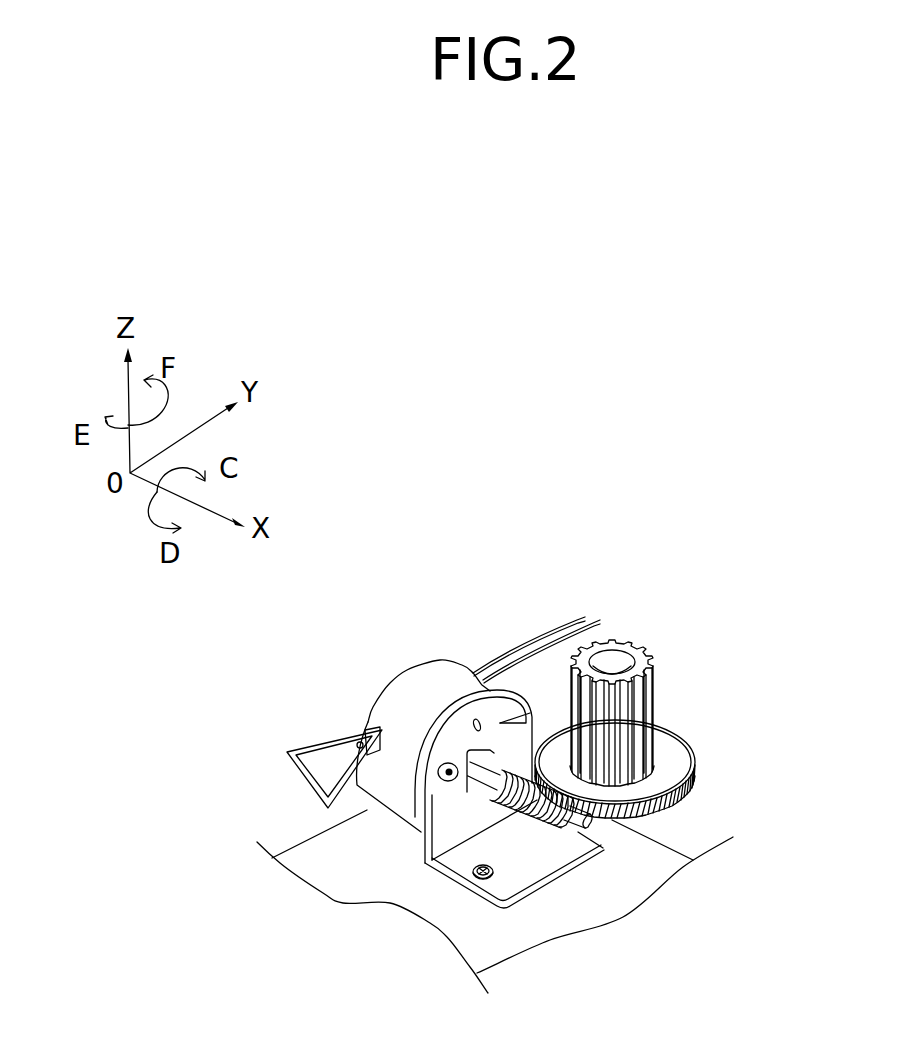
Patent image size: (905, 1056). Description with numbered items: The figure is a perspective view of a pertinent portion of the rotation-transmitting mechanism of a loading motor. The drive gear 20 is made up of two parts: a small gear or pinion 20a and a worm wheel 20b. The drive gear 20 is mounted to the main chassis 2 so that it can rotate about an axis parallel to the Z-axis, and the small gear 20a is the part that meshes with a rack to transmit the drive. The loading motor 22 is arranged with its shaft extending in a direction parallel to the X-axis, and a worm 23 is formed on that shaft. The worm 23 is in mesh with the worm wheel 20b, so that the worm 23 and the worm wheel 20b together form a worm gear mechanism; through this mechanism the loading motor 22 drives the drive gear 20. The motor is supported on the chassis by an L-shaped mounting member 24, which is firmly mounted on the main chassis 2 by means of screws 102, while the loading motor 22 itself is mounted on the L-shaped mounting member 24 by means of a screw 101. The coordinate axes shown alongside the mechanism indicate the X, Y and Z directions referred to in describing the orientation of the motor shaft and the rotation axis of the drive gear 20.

The main chassis 2 is at (363, 860).
The drive gear 20 is at (672, 758).
The small gear (pinion) 20a is at (642, 650).
The worm wheel 20b is at (667, 810).
The loading motor 22 is at (417, 725).
The worm 23 is at (540, 828).
The L-shaped mounting member 24 is at (520, 737).
The screw 101 is at (348, 738).
The screws 102 is at (473, 880).